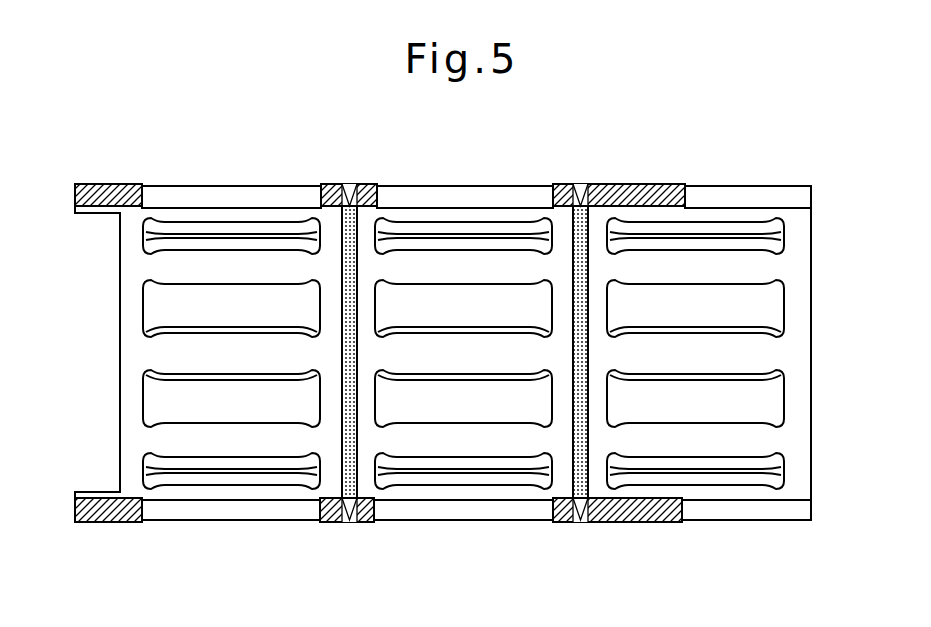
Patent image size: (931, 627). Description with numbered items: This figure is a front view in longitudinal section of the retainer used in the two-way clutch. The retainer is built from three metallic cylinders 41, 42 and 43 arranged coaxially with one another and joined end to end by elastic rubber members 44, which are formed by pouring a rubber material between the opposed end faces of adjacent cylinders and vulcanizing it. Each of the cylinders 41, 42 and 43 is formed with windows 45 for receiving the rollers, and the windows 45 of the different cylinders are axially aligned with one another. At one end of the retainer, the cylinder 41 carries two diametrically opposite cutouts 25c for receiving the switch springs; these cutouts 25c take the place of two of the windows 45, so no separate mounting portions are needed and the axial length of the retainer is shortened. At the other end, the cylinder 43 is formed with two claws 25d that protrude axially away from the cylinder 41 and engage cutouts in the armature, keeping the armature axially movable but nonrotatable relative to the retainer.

The cutout 25c is at (777, 200).
The claw 25d is at (103, 184).
The metallic cylinder 41 is at (688, 184).
The metallic cylinder 42 is at (470, 184).
The metallic cylinder 43 is at (228, 184).
The elastic rubber member 44 is at (343, 518).
The window 45 is at (197, 512).